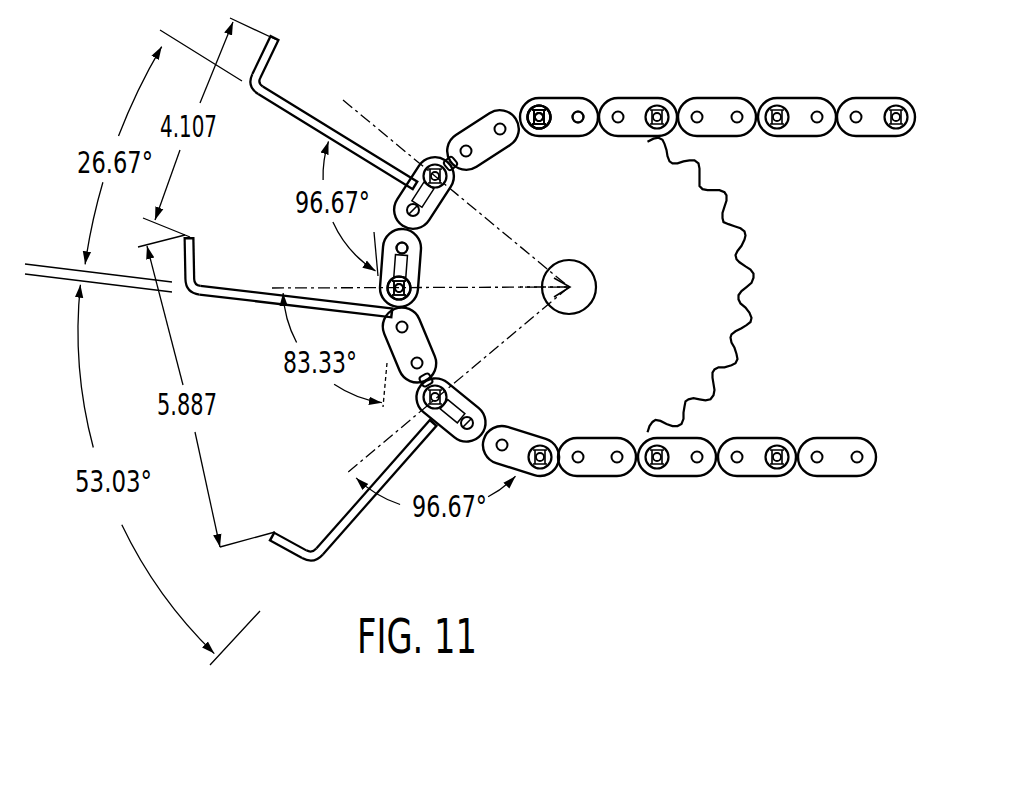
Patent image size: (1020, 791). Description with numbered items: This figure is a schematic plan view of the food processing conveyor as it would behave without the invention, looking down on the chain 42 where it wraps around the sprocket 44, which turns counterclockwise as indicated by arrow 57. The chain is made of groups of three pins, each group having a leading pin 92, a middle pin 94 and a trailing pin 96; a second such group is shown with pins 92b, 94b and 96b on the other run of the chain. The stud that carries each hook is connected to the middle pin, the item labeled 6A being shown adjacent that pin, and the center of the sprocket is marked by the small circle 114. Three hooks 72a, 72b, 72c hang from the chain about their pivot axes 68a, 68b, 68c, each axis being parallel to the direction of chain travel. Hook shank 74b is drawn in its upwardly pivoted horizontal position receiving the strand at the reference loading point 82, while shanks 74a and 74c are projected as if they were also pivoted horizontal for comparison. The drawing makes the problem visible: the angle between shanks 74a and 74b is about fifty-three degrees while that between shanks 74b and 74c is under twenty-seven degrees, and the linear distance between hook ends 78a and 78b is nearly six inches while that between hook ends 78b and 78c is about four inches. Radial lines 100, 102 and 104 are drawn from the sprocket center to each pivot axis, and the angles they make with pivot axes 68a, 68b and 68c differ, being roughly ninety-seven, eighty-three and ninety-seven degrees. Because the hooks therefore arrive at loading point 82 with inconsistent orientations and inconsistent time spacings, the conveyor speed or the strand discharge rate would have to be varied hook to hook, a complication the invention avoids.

The chain 42 is at (807, 93).
The sprocket 44 is at (720, 230).
The counterclockwise rotation arrow 57 is at (412, 78).
The pivot axis 68a is at (522, 484).
The pivot axis 68b is at (388, 372).
The pivot axis 68c is at (406, 193).
The hook 72a is at (330, 562).
The hook 72b is at (196, 283).
The hook 72c is at (262, 82).
The hook shank 74a is at (353, 526).
The hook shank 74b is at (241, 302).
The hook shank 74c is at (294, 112).
The hook end 78a is at (272, 530).
The hook end 78b is at (193, 231).
The hook end 78c is at (280, 33).
The reference loading point 82 is at (337, 286).
The leading pin 92 is at (501, 122).
The connecting link 92b is at (407, 325).
The middle pin 94 is at (542, 106).
The pin 94b is at (412, 292).
The trailing pin 96 is at (582, 110).
The hole 96b is at (408, 247).
The radial line 100 is at (520, 334).
The radial line 102 is at (523, 287).
The radial line 104 is at (395, 138).
The sprocket axis 114 is at (572, 285).
The bushing 6A is at (539, 131).